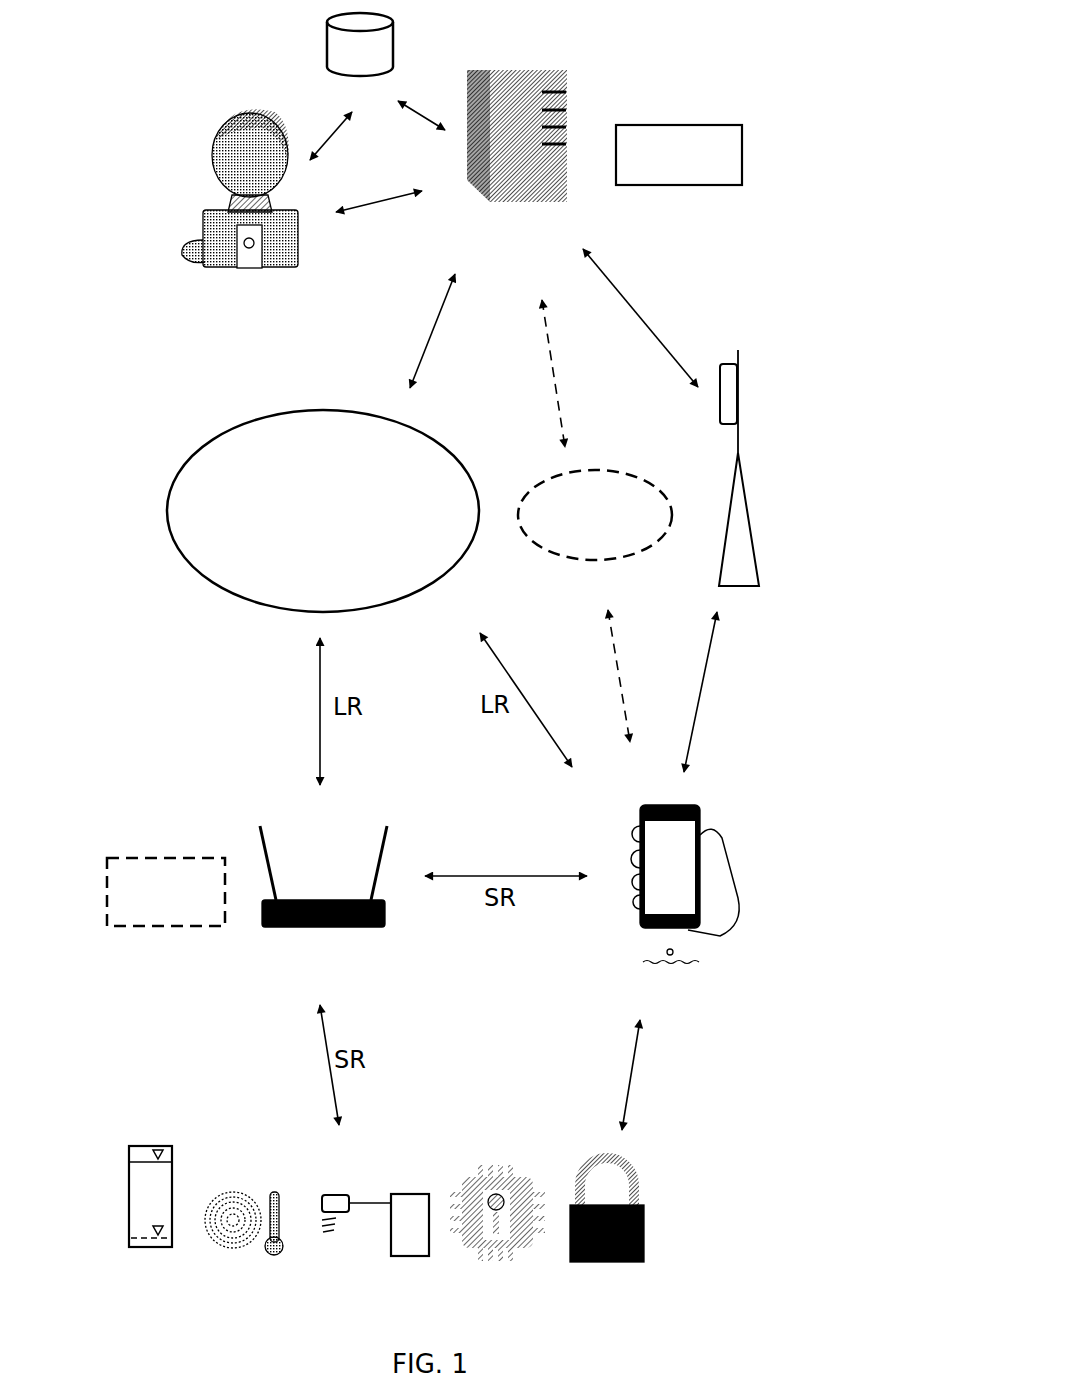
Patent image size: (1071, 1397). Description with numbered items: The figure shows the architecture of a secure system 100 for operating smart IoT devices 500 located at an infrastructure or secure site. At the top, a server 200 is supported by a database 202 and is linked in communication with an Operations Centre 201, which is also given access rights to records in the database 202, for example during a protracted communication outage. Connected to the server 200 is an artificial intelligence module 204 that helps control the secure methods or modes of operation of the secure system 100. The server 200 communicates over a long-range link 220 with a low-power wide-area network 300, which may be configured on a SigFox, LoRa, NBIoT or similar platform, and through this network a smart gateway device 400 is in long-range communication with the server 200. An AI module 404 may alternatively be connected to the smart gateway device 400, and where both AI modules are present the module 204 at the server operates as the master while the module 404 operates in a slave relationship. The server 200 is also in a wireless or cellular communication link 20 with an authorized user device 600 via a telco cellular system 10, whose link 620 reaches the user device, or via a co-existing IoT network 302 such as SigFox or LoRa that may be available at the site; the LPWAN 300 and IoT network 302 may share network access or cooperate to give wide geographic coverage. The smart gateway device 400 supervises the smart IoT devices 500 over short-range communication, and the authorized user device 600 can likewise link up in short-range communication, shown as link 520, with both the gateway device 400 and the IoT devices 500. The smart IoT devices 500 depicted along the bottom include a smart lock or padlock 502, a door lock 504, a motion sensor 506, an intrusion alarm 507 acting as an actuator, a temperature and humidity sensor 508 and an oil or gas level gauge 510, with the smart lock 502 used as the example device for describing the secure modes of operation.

The secure system 100 is at (720, 66).
The database 202 is at (330, 44).
The Operations Centre 201 is at (240, 210).
The server 200 is at (517, 159).
The artificial intelligence (AI) module 204 is at (555, 175).
The communication link to LPWAN 220 is at (417, 331).
The wireless or cellular communication link 20 is at (640, 318).
The telco cellular system 10 is at (756, 468).
The low-power wide-area network (LPWAN) 300 is at (323, 511).
The IoT network 302 is at (595, 515).
The cellular communication link 620 is at (717, 692).
The AI module 404 is at (260, 910).
The smart gateway device 400 is at (323, 900).
The authorized user device 600 is at (685, 902).
The short range link to devices 520 is at (650, 1075).
The smart IoT devices 500 is at (668, 1228).
The oil or gas level gauge 510 is at (150, 1221).
The temperature and humidity sensor 508 is at (244, 1242).
The motion sensor 506 is at (351, 1239).
The intrusion alarm 507 is at (410, 1241).
The door lock 504 is at (497, 1231).
The smart lock or padlock 502 is at (607, 1228).